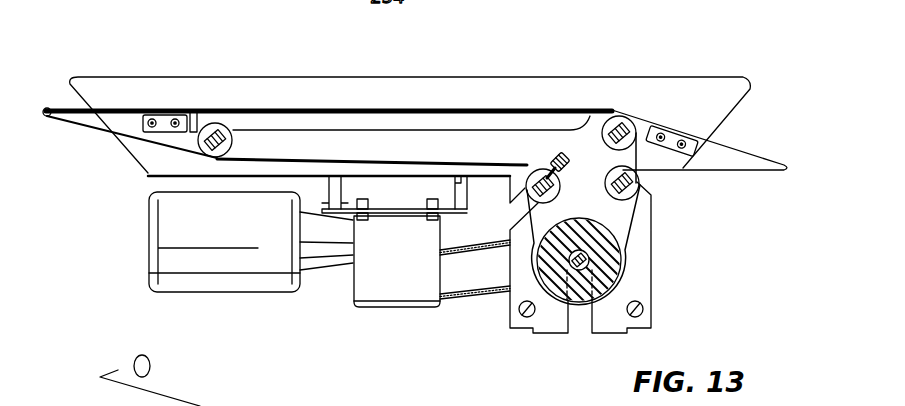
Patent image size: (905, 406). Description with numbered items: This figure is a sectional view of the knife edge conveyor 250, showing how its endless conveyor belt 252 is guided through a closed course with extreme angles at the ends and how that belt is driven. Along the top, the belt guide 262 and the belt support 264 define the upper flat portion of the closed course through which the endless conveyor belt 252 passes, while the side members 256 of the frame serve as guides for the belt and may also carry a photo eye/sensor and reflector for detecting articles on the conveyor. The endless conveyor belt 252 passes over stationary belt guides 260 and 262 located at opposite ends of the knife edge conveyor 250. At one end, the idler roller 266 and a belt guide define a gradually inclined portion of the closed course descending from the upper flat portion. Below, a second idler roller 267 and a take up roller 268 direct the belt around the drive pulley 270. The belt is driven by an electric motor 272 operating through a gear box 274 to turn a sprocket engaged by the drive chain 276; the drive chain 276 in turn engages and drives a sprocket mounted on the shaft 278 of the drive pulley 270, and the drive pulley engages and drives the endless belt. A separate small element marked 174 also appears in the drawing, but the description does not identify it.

The sensor 174 is at (150, 364).
The knife edge conveyor 250 is at (120, 166).
The endless conveyor belt 252 is at (750, 154).
The side members 256 is at (706, 82).
The stationary belt guide 260 is at (731, 176).
The belt guide 262 is at (46, 117).
The belt support 264 is at (187, 133).
The idler roller 266 is at (618, 112).
The second idler roller 267 is at (637, 193).
The take up roller 268 is at (610, 223).
The drive pulley 270 is at (620, 272).
The electric motor 272 is at (147, 281).
The gear box 274 is at (380, 308).
The drive chain 276 is at (455, 305).
The shaft 278 is at (586, 300).